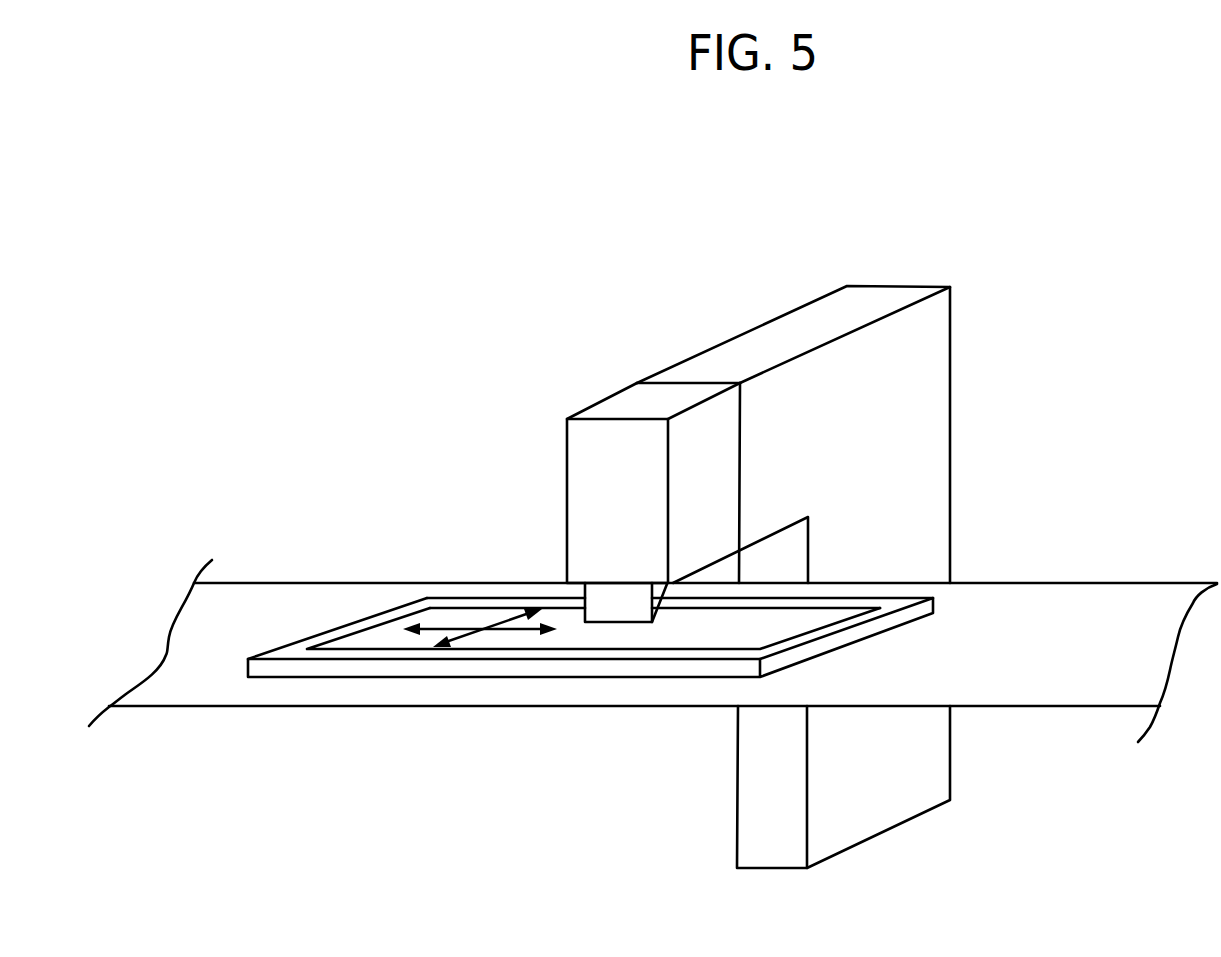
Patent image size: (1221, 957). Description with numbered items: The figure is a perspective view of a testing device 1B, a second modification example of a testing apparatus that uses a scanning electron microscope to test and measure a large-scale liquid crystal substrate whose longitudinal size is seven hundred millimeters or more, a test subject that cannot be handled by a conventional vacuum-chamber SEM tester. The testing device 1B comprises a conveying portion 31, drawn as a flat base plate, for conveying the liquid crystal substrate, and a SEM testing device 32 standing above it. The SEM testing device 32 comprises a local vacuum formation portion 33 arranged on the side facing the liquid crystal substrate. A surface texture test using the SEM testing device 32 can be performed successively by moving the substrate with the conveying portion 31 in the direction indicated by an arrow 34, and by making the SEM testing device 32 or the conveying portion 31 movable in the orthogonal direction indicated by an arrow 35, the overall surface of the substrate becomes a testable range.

The testing device 1B is at (383, 384).
The conveying portion 31 is at (1013, 668).
The SEM testing device 32 is at (595, 410).
The local vacuum formation portion 33 is at (638, 610).
The arrow 34 is at (432, 620).
The arrow 35 is at (470, 634).